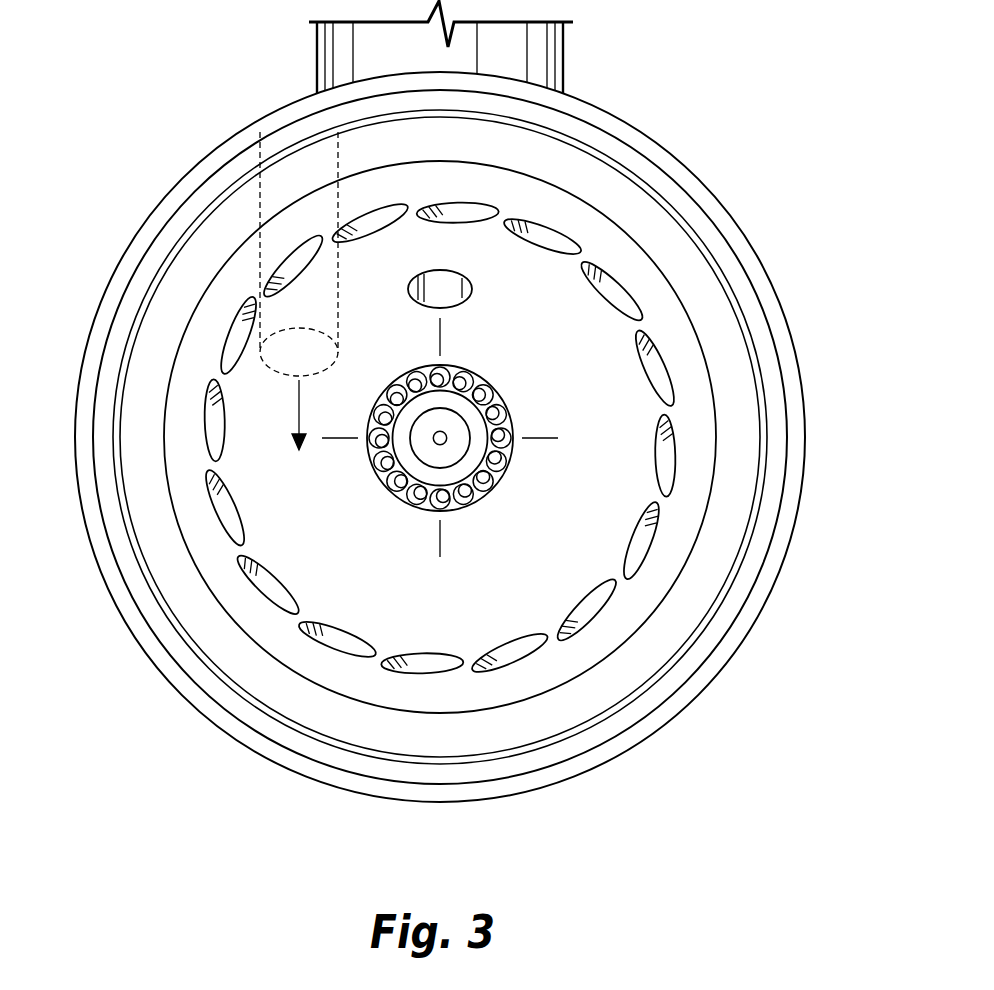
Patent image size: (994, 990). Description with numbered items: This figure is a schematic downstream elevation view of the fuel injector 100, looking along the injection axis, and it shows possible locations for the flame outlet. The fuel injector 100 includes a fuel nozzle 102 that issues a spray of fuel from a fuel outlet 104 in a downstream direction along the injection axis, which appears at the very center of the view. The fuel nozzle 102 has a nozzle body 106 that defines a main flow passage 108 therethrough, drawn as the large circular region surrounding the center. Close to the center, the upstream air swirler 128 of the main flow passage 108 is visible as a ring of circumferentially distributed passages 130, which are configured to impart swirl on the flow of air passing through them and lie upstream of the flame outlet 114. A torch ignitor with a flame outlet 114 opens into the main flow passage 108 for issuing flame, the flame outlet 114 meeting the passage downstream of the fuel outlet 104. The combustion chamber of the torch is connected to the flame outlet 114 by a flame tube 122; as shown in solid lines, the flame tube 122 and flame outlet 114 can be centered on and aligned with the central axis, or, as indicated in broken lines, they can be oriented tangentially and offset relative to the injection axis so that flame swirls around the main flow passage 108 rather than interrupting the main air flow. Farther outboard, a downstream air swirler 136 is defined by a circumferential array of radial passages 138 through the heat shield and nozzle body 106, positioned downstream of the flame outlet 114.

The fuel injector 100 is at (840, 238).
The fuel nozzle 102 is at (668, 102).
The fuel outlet 104 is at (443, 470).
The nozzle body 106 is at (552, 323).
The main flow passage 108 is at (330, 560).
The flame outlet 114 is at (458, 270).
The flame tube 122 is at (442, 288).
The upstream air swirler 128 is at (499, 446).
The circumferentially distributed passages 130 is at (498, 482).
The downstream air swirler 136 is at (420, 667).
The radial passages 138 is at (439, 532).